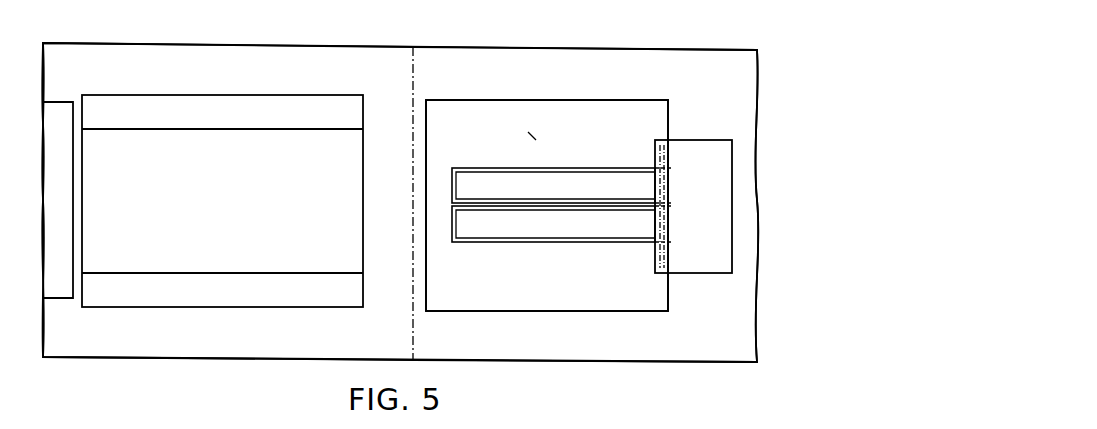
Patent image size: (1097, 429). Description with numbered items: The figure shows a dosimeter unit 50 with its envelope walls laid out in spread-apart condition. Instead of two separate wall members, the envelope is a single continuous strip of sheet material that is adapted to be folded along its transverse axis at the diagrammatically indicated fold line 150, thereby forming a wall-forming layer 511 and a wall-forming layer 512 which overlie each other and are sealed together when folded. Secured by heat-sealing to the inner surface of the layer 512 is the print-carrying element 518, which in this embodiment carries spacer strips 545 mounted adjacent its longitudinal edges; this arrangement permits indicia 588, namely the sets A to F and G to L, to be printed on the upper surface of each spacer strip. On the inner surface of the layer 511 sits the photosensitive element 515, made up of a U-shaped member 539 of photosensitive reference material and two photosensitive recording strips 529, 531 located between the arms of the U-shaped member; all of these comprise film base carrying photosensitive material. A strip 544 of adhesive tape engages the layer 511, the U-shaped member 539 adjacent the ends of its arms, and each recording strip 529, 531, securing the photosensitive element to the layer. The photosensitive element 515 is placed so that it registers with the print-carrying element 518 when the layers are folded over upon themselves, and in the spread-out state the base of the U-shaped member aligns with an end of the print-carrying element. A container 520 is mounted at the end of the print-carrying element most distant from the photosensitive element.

The dosimeter unit 50 is at (549, 46).
The fold line 150 is at (414, 61).
The wall-forming layer 511 is at (620, 62).
The wall-forming layer 512 is at (214, 57).
The photosensitive element 515 is at (583, 314).
The print-carrying element 518 is at (163, 307).
The container 520 is at (57, 290).
The photosensitive recording strip 529 is at (551, 182).
The photosensitive recording strip 531 is at (550, 224).
The U-shaped member 539 is at (486, 295).
The strip of adhesive tape 544 is at (700, 145).
The spacer strips 545 is at (110, 117).
The indicia 588 is at (250, 122).